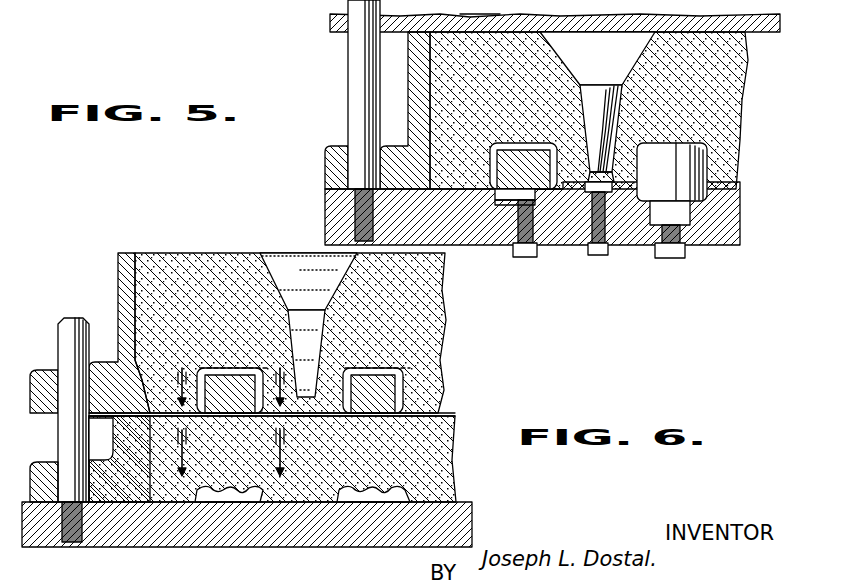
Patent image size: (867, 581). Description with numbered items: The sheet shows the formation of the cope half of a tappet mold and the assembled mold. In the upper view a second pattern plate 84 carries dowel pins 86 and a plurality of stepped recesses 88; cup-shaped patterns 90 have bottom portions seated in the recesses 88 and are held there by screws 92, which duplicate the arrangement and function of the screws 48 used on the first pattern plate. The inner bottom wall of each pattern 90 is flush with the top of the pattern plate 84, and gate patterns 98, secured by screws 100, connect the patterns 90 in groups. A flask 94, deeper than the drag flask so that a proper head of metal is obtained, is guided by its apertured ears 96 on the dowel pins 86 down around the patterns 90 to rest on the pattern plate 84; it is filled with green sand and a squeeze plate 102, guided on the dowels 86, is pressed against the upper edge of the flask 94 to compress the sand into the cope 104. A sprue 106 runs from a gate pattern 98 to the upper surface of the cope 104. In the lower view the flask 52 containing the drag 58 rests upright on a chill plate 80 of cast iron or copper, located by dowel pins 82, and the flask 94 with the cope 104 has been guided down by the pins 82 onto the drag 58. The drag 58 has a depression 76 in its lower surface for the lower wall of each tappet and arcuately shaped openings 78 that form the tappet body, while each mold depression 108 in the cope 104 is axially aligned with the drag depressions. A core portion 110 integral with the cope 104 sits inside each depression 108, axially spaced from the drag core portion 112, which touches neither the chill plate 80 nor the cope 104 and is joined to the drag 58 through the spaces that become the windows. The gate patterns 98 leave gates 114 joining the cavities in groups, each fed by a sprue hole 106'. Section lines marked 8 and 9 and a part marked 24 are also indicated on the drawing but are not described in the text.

In FIG. 5, the screws 48 is at (480, 7).
In FIG. 5, the squeeze plate 102 is at (330, 24).
In FIG. 5, the cope 104 is at (736, 95).
In FIG. 6, the cope 104 is at (439, 323).
In FIG. 5, the flask 94 is at (411, 82).
In FIG. 6, the flask 94 is at (118, 276).
In FIG. 5, the apertured ears 96 is at (341, 150).
In FIG. 6, the apertured ears 96 is at (48, 347).
In FIG. 5, the dowel pins 86 is at (357, 61).
In FIG. 5, the sprue 106 is at (597, 107).
In FIG. 6, the sprue hole 106' is at (307, 312).
In FIG. 5, the second pattern plate 84 is at (330, 212).
In FIG. 5, the patterns 90 is at (493, 165).
In FIG. 5, the stepped recesses 88 is at (505, 246).
In FIG. 5, the screws 92 is at (534, 252).
In FIG. 5, the screws 100 is at (598, 258).
In FIG. 5, the gate patterns 98 is at (621, 208).
In FIG. 6, the mold depressions 108 is at (440, 380).
In FIG. 6, the core portion 110 is at (440, 392).
In FIG. 6, the gates 114 is at (442, 412).
In FIG. 6, the drag 58 is at (440, 446).
In FIG. 6, the flask 52 is at (114, 437).
In FIG. 6, the dowel pins 82 is at (72, 425).
In FIG. 6, the chill plate 80 is at (471, 533).
In FIG. 6, the depression 76 is at (257, 544).
In FIG. 6, the arcuately shaped openings 78 is at (306, 544).
In FIG. 6, the core portions 112 is at (213, 502).
In FIG. 6, the die section 24 is at (290, 418).
In FIG. 6, the section line 8- 8 is at (227, 387).
In FIG. 6, the section line 9- 9 is at (228, 456).